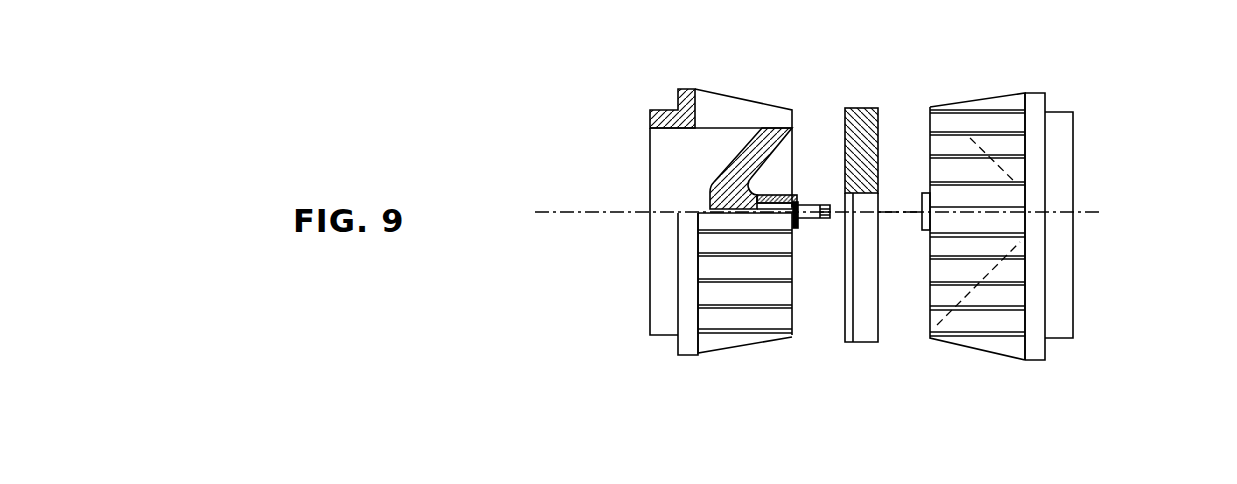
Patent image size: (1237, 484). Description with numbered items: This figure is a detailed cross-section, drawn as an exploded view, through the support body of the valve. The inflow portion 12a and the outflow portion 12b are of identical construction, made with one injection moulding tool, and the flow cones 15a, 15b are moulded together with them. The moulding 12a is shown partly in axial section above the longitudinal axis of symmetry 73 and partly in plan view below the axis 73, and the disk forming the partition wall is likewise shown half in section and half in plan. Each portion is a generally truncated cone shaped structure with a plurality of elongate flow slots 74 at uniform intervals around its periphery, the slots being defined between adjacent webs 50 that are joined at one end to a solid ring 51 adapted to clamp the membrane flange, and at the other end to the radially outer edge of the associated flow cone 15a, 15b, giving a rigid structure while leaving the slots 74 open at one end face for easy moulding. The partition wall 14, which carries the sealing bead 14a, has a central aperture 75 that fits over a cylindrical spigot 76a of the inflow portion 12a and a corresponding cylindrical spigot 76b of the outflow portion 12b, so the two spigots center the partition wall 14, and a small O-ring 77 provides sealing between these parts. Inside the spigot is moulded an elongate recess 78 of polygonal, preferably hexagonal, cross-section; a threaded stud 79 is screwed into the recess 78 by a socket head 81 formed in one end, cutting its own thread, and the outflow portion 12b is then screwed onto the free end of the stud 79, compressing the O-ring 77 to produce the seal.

The inflow portion 12a is at (650, 273).
The outflow portion 12b is at (1073, 240).
The partition wall 14 is at (878, 228).
The sealing bead 14a is at (847, 108).
The flow cone 15a is at (713, 180).
The flow cone 15b is at (1010, 180).
The webs 50 is at (755, 102).
The solid ring 51 is at (650, 111).
The longitudinal axis of symmetry 73 is at (797, 216).
The elongate flow slots 74 is at (963, 128).
The central aperture 75 is at (878, 214).
The cylindrical spigot 76a is at (796, 198).
The cylindrical spigot 76b is at (924, 230).
The O-ring 77 is at (797, 199).
The elongate recess 78 is at (793, 196).
The threaded stud 79 is at (800, 219).
The socket head 81 is at (826, 219).